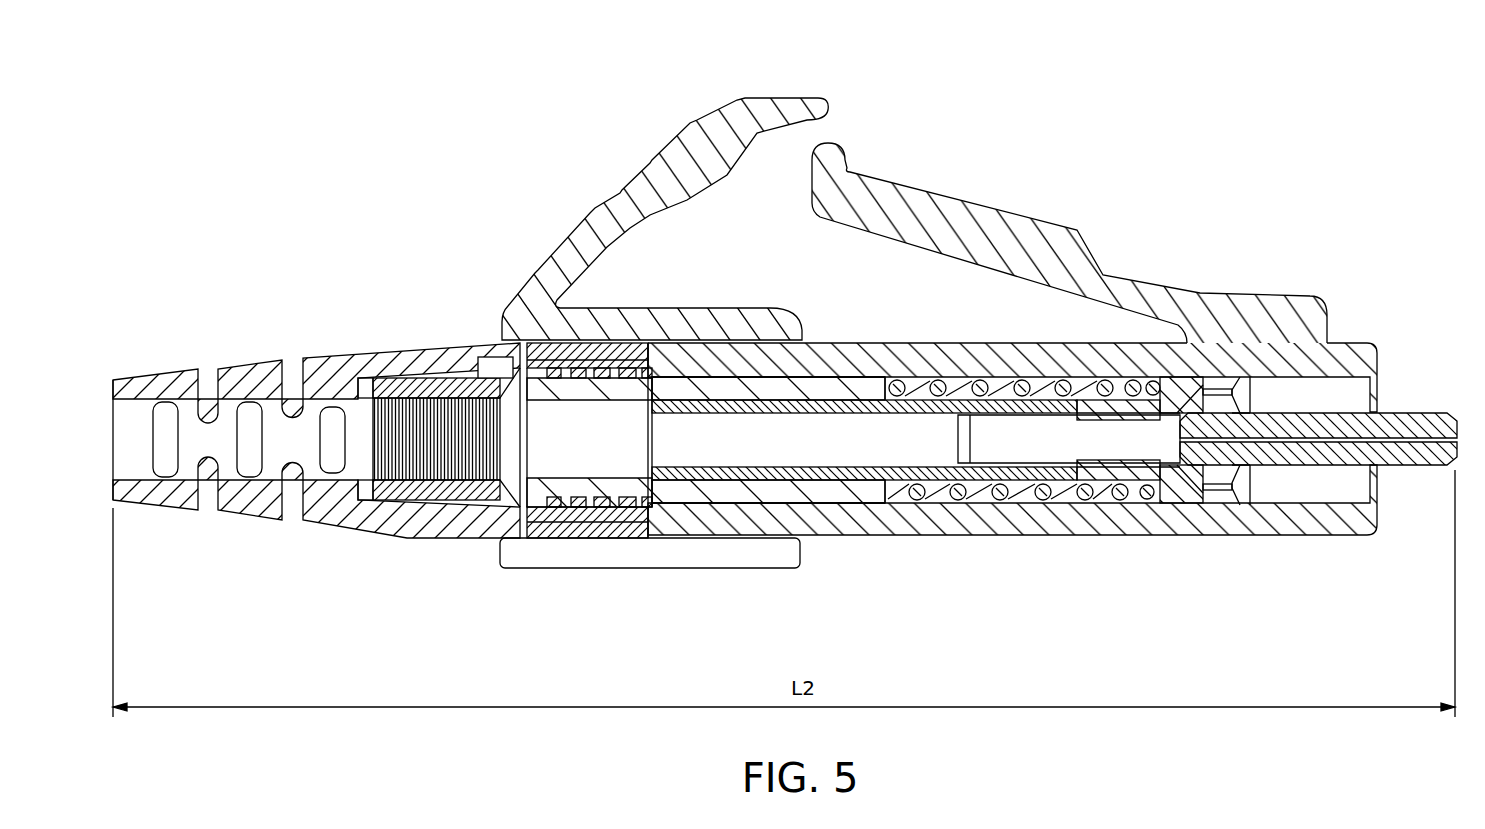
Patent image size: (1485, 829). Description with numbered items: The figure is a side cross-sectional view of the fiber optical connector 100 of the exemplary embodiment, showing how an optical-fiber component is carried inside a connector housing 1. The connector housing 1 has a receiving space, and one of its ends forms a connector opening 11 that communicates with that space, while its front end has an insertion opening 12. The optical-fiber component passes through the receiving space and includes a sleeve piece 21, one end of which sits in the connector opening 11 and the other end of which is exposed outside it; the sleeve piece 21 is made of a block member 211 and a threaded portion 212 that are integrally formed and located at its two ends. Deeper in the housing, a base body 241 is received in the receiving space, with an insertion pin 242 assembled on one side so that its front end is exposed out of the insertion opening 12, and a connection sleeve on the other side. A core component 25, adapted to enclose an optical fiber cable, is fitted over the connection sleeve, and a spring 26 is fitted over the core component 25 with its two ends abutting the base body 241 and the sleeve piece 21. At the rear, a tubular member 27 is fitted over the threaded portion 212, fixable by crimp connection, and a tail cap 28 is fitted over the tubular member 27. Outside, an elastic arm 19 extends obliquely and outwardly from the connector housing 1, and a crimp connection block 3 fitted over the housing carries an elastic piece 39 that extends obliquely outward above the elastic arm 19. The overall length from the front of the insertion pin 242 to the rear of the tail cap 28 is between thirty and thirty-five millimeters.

The fiber optical connector 100 is at (266, 146).
The connector housing 1 is at (983, 528).
The connector opening 11 is at (652, 373).
The insertion opening 12 is at (1307, 488).
The elastic arm 19 is at (930, 206).
The elastic piece 39 is at (641, 196).
The crimp connection block 3 is at (517, 554).
The sleeve piece 21 is at (630, 502).
The block member 211 is at (676, 493).
The threaded portion 212 is at (595, 528).
The core component 25 is at (884, 478).
The spring 26 is at (1047, 481).
The tubular member 27 is at (420, 385).
The tail cap 28 is at (252, 506).
The base body 241 is at (1186, 493).
The insertion pin 242 is at (1283, 454).